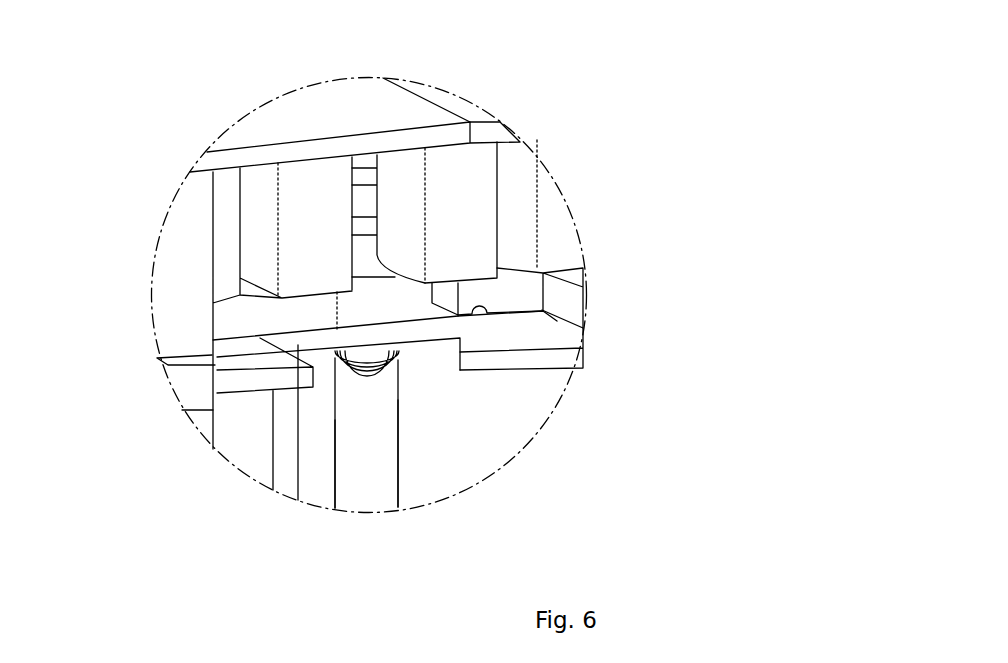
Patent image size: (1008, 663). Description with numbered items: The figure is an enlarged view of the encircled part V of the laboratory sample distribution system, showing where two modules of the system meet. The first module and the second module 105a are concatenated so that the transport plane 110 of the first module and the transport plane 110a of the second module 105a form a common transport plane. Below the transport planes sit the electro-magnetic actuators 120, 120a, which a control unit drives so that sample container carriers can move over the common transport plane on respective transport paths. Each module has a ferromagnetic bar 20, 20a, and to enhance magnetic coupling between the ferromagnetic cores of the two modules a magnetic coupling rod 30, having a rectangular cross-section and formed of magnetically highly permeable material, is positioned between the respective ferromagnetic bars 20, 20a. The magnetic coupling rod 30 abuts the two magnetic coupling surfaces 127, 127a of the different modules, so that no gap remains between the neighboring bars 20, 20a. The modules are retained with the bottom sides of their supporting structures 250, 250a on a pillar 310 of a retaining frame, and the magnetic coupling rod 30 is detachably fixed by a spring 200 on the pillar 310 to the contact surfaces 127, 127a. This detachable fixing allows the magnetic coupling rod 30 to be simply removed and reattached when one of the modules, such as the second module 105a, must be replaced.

The detail view portion V is at (568, 213).
The transport plane 110 is at (372, 98).
The transport plane 110a is at (457, 100).
The electro-magnetic actuator 120 is at (330, 237).
The electro-magnetic actuator 120a is at (488, 231).
The ferromagnetic bar 20 is at (246, 352).
The ferromagnetic bar 20a is at (500, 324).
The second module 105a is at (538, 353).
The supporting structure 250 is at (228, 390).
The supporting structure 250a is at (520, 362).
The magnetic coupling surface 127 is at (298, 500).
The magnetic coupling surface 127a is at (493, 320).
The spring 200 is at (348, 377).
The pillar 310 is at (378, 500).
The magnetic coupling rod 30 is at (420, 347).